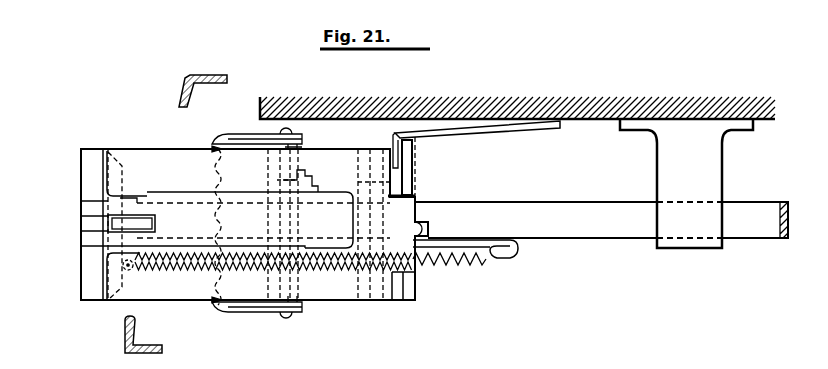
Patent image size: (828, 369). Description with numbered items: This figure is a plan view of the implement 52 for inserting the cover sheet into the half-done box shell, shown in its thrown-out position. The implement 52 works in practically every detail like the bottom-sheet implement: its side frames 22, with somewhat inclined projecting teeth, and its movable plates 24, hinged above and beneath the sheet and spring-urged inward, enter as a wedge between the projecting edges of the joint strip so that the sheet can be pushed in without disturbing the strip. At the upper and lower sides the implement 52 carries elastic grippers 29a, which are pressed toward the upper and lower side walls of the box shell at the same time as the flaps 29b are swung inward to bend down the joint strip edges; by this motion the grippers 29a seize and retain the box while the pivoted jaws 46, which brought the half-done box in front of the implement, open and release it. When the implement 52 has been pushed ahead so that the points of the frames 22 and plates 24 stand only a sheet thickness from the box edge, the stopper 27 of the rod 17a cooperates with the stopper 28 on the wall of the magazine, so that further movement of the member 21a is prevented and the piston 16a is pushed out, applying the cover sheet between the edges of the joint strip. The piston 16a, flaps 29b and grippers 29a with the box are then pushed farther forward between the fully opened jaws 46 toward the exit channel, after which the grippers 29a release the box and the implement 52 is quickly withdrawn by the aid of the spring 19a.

The rod 17a is at (560, 228).
The stopper 28 is at (393, 134).
The stopper 27 is at (405, 177).
The implement 52 is at (158, 148).
The elastic grippers 29a is at (95, 238).
The member 21a is at (415, 197).
The piston 16a is at (120, 265).
The flaps 29b is at (188, 292).
The spring 19a is at (459, 262).
The movable plates 24 is at (228, 163).
The side frames 22 is at (266, 309).
The pivoted jaws 46 is at (188, 80).